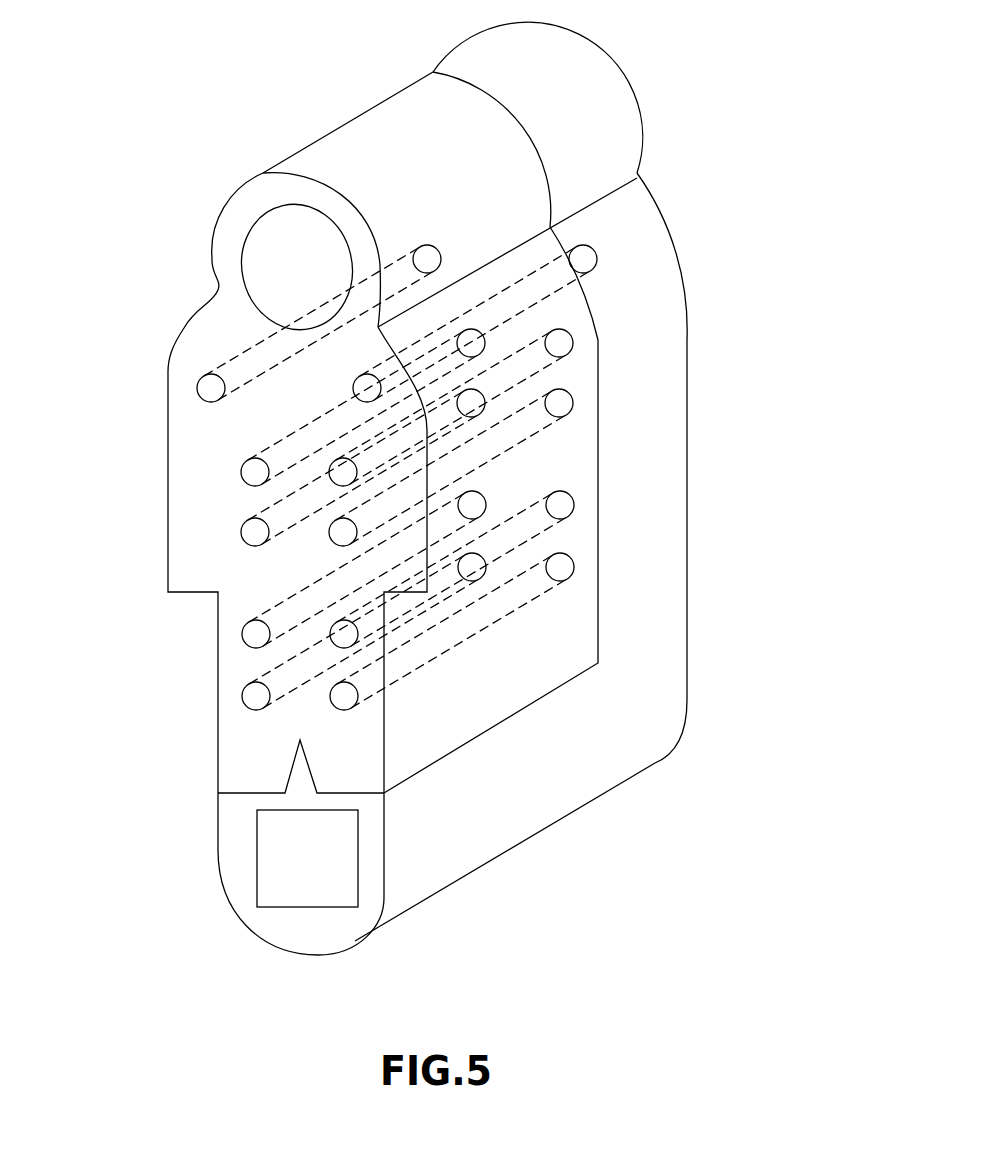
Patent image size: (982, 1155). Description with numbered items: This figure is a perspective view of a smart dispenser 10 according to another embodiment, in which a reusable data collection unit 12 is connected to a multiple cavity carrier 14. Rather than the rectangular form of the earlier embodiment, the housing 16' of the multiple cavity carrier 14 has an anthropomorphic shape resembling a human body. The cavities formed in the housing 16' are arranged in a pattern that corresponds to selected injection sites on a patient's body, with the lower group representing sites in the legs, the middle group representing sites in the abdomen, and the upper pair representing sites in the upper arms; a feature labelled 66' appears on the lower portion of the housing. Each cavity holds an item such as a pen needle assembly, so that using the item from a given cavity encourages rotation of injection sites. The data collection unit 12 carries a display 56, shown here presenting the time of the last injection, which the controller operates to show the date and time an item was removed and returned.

The smart dispenser 10 is at (185, 117).
The data collection unit 12 is at (550, 790).
The multiple cavity carrier 14 is at (480, 701).
The housing 16' is at (479, 181).
The display 56 is at (270, 858).
The housing bottom portion 66' is at (696, 735).